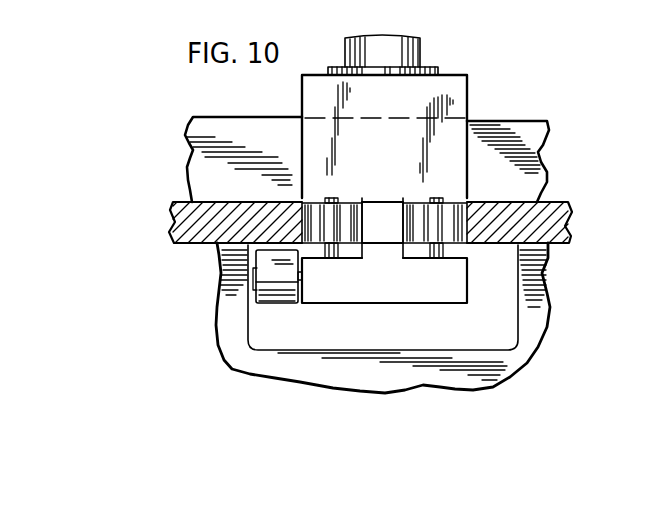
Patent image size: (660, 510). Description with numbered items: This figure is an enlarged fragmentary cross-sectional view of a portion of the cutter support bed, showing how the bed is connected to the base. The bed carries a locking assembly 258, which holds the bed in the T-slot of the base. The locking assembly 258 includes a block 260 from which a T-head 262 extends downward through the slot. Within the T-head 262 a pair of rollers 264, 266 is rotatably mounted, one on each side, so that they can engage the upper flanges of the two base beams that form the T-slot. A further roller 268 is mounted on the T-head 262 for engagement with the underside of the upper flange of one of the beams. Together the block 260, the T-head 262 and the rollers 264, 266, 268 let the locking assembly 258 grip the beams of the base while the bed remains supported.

The locking assembly 258 is at (502, 105).
The block 260 is at (433, 88).
The T-head 262 is at (408, 295).
The bushing sleeve 264 is at (347, 212).
The roller 266 is at (458, 227).
The roller 268 is at (265, 295).